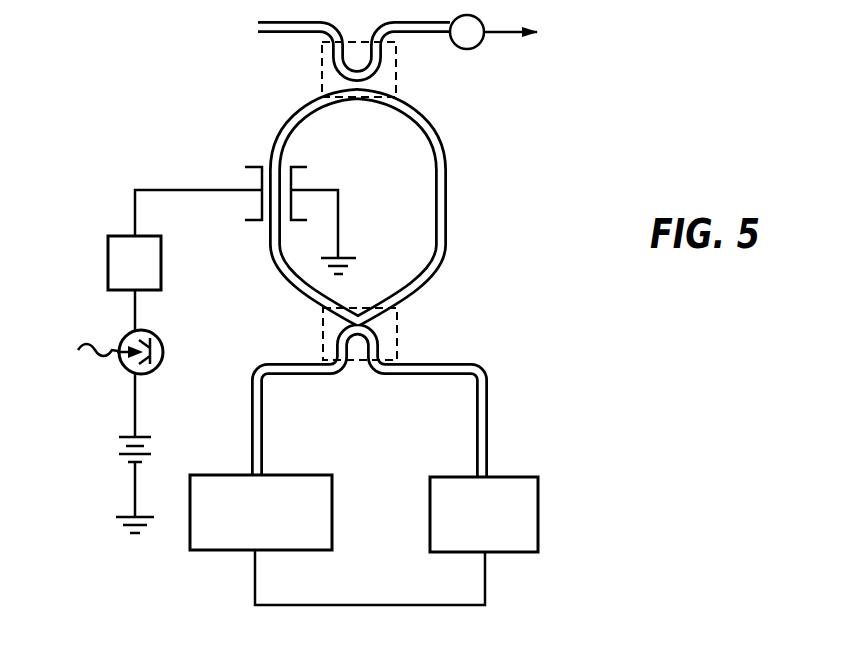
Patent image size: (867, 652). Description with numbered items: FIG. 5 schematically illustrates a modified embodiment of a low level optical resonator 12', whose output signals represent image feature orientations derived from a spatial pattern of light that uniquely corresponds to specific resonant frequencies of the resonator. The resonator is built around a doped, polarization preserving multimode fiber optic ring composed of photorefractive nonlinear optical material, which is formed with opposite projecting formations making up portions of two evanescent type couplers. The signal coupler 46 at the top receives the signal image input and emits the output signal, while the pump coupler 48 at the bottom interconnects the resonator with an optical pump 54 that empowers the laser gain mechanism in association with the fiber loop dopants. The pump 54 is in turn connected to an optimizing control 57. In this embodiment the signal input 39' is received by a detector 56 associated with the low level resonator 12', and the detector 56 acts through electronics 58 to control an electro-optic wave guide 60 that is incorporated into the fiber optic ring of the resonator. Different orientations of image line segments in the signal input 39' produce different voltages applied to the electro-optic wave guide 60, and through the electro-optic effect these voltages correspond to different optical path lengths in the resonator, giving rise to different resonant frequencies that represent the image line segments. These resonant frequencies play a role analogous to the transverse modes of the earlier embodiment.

The low level optical resonator 12' is at (345, 304).
The signal coupler 46 is at (322, 70).
The pump coupler 48 is at (322, 333).
The electro-optic wave guide 60 is at (256, 146).
The electronics 58 is at (125, 250).
The detector 56 is at (125, 366).
The signal input 39' is at (69, 370).
The optimizing control 57 is at (288, 475).
The optical pump 54 is at (527, 477).